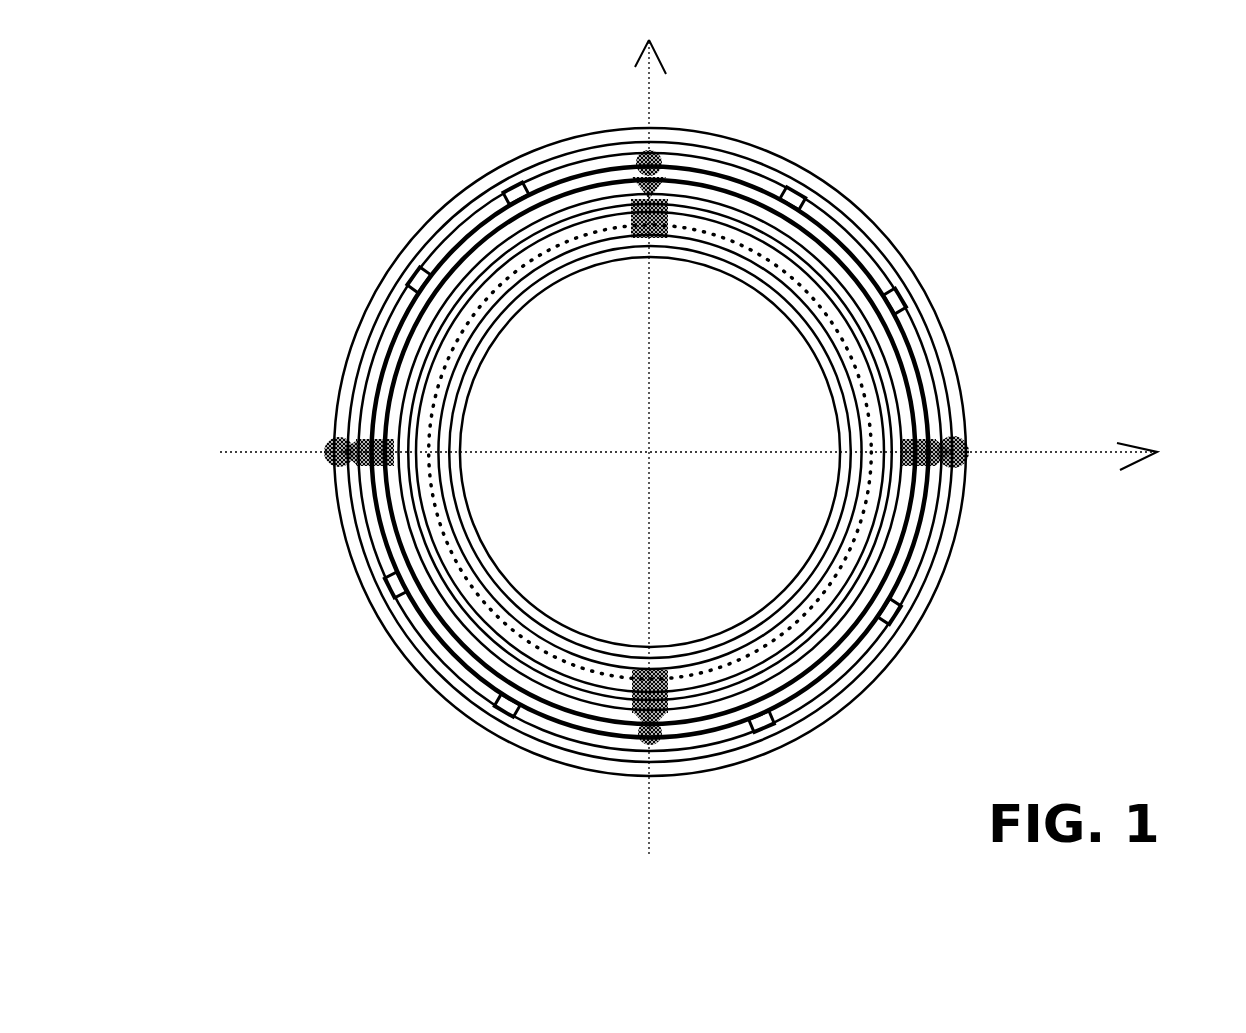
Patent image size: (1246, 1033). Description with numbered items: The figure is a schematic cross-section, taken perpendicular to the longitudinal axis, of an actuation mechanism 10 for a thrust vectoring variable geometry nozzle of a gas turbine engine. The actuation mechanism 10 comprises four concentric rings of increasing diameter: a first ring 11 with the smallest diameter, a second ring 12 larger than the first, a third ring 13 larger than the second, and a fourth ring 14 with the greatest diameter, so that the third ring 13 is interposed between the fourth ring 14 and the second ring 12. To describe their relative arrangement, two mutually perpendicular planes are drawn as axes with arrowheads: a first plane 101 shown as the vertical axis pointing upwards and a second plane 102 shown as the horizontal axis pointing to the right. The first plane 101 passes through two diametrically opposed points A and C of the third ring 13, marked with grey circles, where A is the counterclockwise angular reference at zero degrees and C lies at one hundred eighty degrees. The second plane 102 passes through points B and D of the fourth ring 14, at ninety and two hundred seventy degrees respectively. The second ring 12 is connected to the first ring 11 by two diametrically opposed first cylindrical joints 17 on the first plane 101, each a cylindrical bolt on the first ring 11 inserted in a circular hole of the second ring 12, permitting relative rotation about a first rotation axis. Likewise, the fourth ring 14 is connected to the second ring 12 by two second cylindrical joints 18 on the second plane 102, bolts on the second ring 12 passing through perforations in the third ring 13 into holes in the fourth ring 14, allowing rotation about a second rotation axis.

The actuation mechanism 10 is at (382, 222).
The first ring 11 is at (790, 305).
The second ring 12 is at (823, 277).
The third ring 13 is at (842, 253).
The fourth ring 14 is at (862, 233).
The first cylindrical joint 17 is at (670, 217).
The second cylindrical joint 18 is at (382, 452).
The first plane 101 is at (650, 108).
The second plane 102 is at (1075, 457).
The point A is at (633, 163).
The point B is at (348, 470).
The point C is at (638, 750).
The point D is at (970, 465).